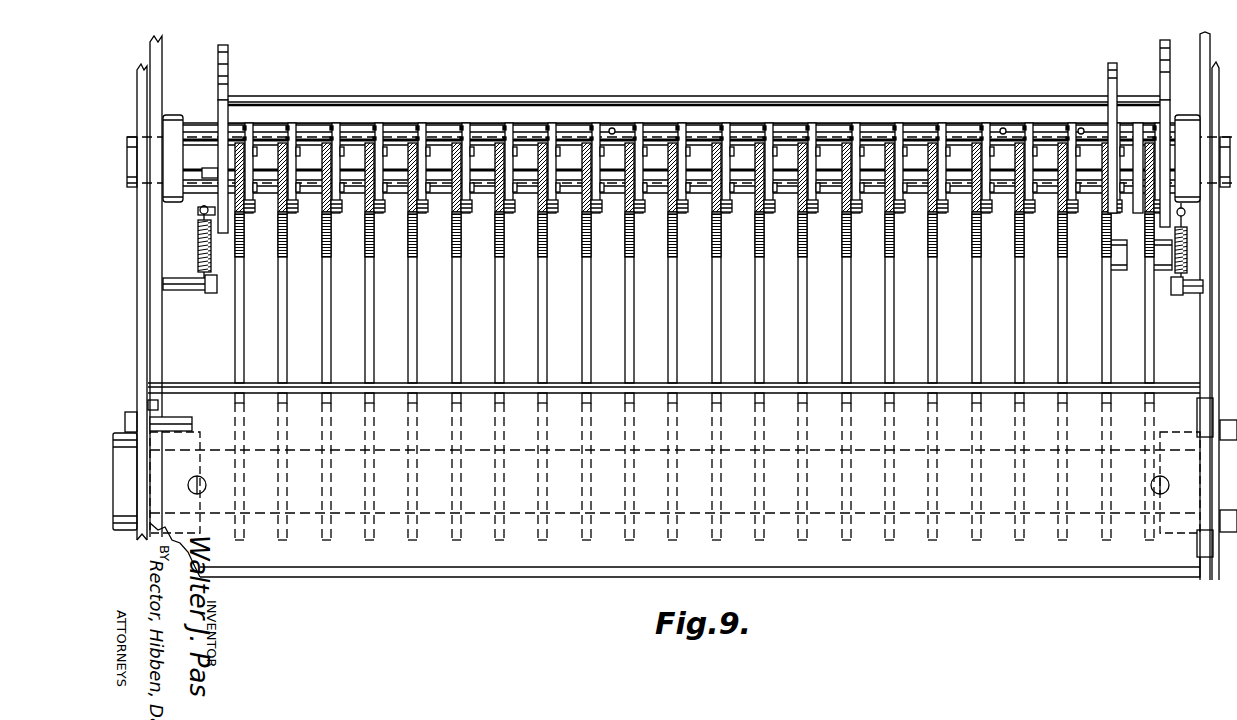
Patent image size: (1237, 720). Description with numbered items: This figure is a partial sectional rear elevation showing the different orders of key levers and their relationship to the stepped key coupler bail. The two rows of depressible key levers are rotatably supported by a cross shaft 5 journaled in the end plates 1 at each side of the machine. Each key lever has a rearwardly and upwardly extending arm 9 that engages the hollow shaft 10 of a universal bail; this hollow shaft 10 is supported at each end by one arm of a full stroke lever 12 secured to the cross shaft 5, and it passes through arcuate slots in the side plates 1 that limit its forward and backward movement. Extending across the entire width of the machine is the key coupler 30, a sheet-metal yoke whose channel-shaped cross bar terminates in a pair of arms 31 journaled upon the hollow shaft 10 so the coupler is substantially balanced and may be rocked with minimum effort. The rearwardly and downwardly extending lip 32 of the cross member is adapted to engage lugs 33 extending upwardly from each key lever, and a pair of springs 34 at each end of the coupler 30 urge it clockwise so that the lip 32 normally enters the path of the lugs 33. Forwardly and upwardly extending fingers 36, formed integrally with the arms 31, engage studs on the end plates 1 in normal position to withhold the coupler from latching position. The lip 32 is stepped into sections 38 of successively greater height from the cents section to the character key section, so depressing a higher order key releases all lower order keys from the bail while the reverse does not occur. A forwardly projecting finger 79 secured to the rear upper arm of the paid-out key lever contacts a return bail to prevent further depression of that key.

The end plate 1 is at (137, 86).
The cross shaft 5 is at (435, 515).
The arm 9 is at (497, 272).
The hollow shaft 10 is at (392, 152).
The full stroke lever 12 is at (162, 58).
The key coupler 30 is at (483, 118).
The arm 31 is at (221, 116).
The lip 32 is at (312, 120).
The lug 33 is at (766, 128).
The spring 34 is at (200, 256).
The finger 36 is at (228, 60).
The stepped section 38 is at (612, 128).
The finger 79 is at (1112, 68).